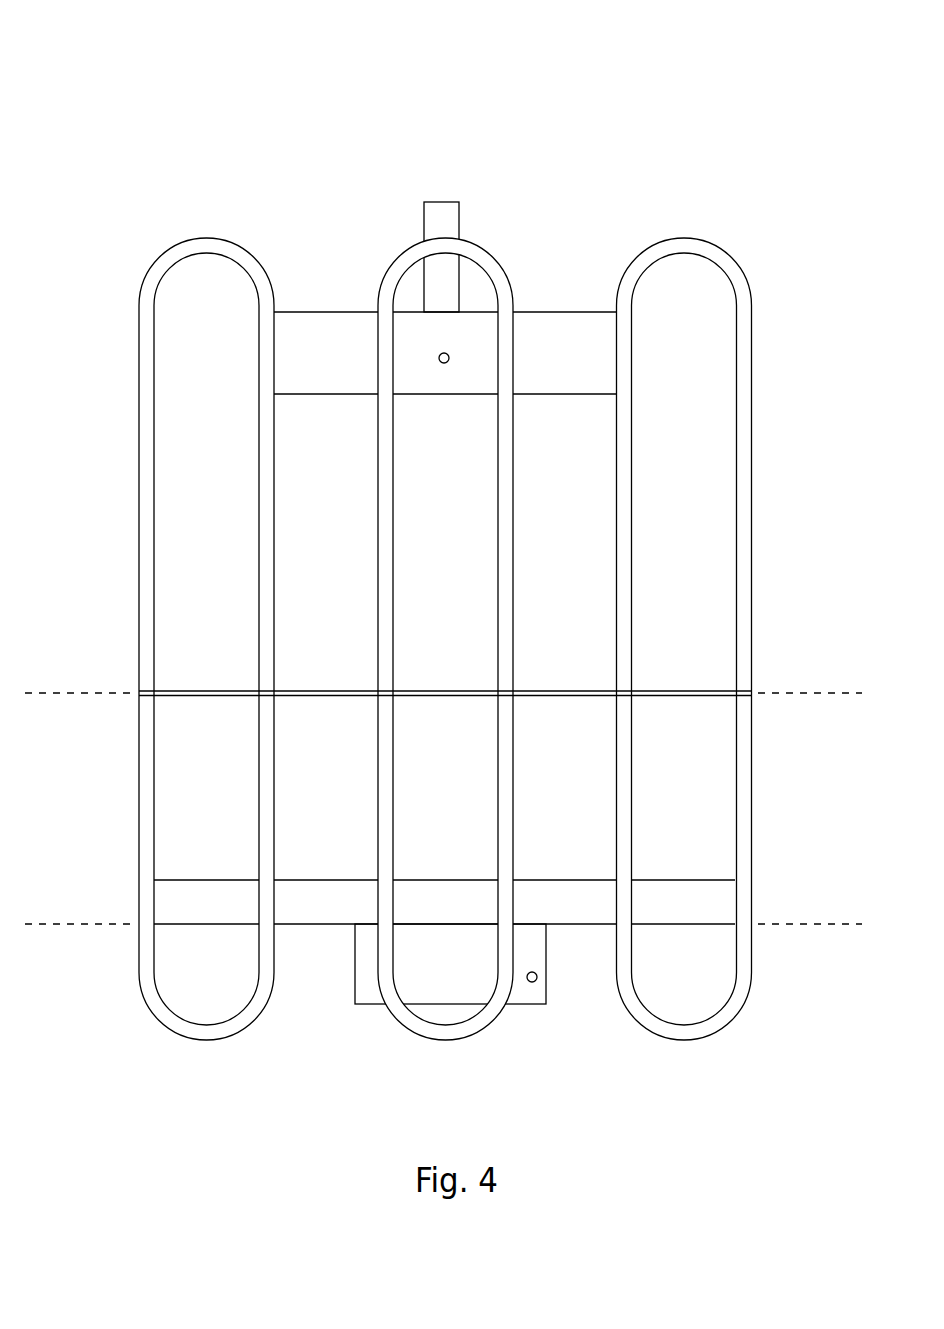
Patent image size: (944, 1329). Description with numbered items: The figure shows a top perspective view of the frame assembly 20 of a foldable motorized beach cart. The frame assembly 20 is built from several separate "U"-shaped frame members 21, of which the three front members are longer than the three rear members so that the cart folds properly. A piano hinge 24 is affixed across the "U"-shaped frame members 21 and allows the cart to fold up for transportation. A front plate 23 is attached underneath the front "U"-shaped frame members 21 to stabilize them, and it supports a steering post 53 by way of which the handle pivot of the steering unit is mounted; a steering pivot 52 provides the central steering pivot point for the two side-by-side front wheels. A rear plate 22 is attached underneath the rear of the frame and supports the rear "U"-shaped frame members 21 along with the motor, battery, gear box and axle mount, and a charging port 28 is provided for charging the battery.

The frame assembly 20 is at (105, 173).
The "U"-shaped frame member 21 is at (206, 238).
The rear plate 22 is at (222, 904).
The front plate 23 is at (313, 366).
The piano hinge 24 is at (138, 692).
The charging port 28 is at (537, 984).
The steering pivot 52 is at (447, 351).
The steering post 53 is at (459, 203).